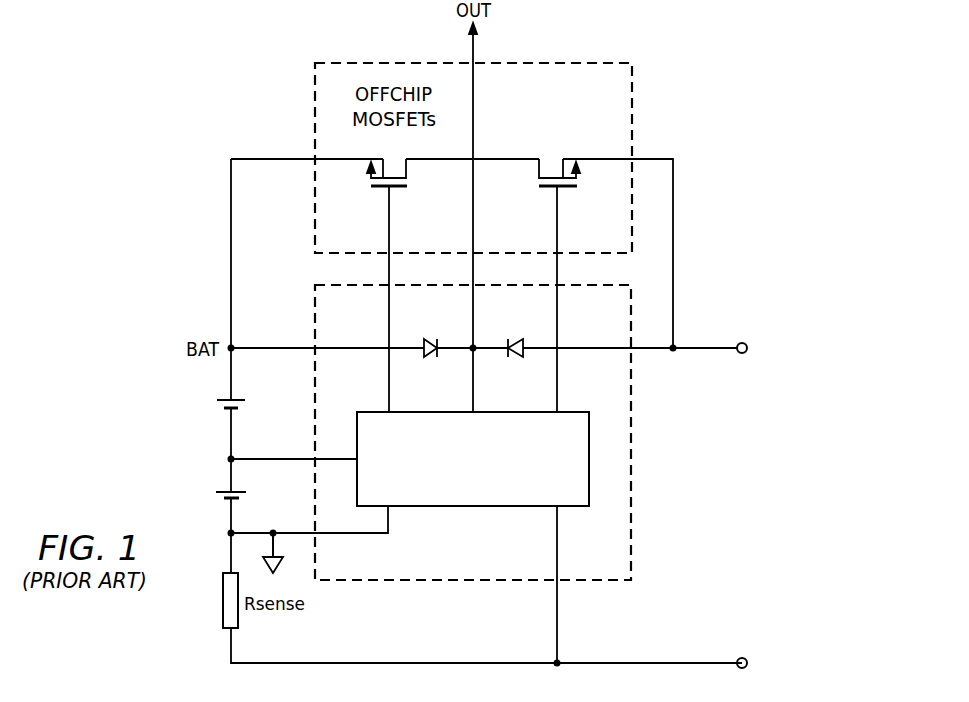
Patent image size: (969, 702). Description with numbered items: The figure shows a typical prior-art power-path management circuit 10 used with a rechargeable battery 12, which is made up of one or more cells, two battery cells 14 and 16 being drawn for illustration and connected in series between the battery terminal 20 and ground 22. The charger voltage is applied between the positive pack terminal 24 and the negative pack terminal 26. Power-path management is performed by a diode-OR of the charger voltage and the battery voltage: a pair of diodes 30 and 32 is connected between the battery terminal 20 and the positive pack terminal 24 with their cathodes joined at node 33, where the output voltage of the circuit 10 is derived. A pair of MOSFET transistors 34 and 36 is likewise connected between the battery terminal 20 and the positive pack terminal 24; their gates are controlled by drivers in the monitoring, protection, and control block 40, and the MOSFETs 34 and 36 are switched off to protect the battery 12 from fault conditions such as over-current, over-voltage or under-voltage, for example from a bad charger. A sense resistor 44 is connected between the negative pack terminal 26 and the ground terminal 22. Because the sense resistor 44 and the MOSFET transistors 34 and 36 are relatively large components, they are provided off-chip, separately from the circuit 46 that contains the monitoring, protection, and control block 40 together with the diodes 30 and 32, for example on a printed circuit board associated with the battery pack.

The power-path management circuit 10 is at (162, 127).
The rechargeable battery 12 is at (210, 459).
The battery cell 14 is at (212, 401).
The battery cell 16 is at (213, 496).
The BAT terminal 20 is at (235, 343).
The ground 22 is at (273, 528).
The PACKP terminal 24 is at (743, 343).
The PACKN terminal 26 is at (744, 657).
The diode 30 is at (430, 356).
The diode 32 is at (518, 356).
The node 33 is at (477, 345).
The MOSFET transistor 34 is at (383, 188).
The MOSFET transistor 36 is at (565, 188).
The monitoring, protection, and control block 40 is at (478, 507).
The sense resistor 44 is at (222, 602).
The circuit 46 is at (632, 452).